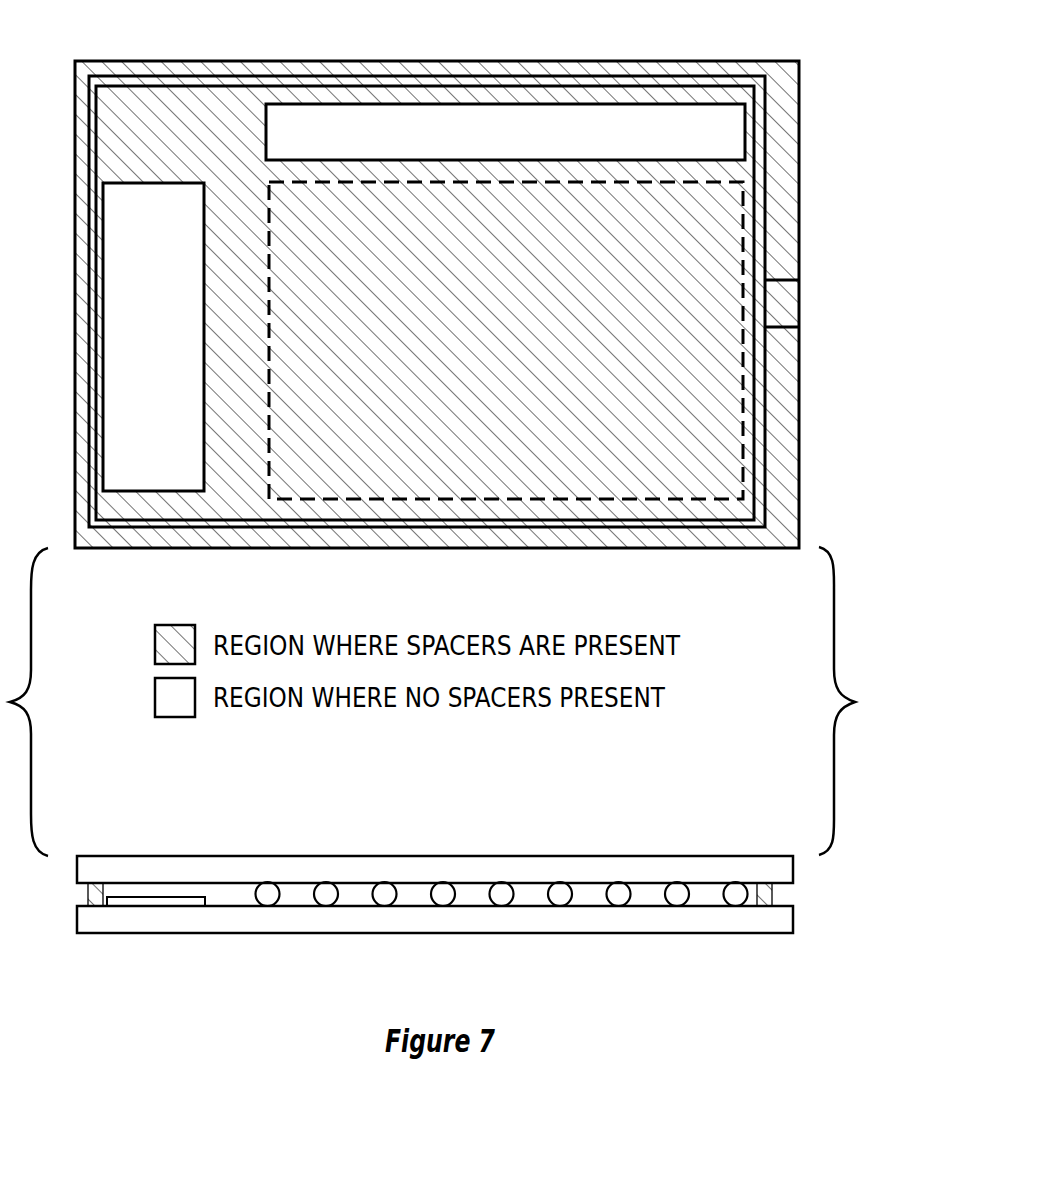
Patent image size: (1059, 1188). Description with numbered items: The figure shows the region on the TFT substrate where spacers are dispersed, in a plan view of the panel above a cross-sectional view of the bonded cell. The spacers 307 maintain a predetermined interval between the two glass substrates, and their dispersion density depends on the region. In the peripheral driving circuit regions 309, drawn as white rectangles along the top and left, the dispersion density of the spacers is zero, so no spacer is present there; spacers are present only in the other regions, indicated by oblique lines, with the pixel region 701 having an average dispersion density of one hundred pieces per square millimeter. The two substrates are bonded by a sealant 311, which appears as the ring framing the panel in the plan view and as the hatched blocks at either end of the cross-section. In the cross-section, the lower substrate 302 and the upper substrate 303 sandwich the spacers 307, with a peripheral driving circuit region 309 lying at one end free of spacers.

The pixel region 701 is at (437, 60).
The sealant 311 is at (295, 80).
The substrate 302 is at (165, 127).
The peripheral driving circuit region 309 is at (527, 145).
The top plate / substrate 303 is at (483, 865).
The spacers 307 is at (502, 895).